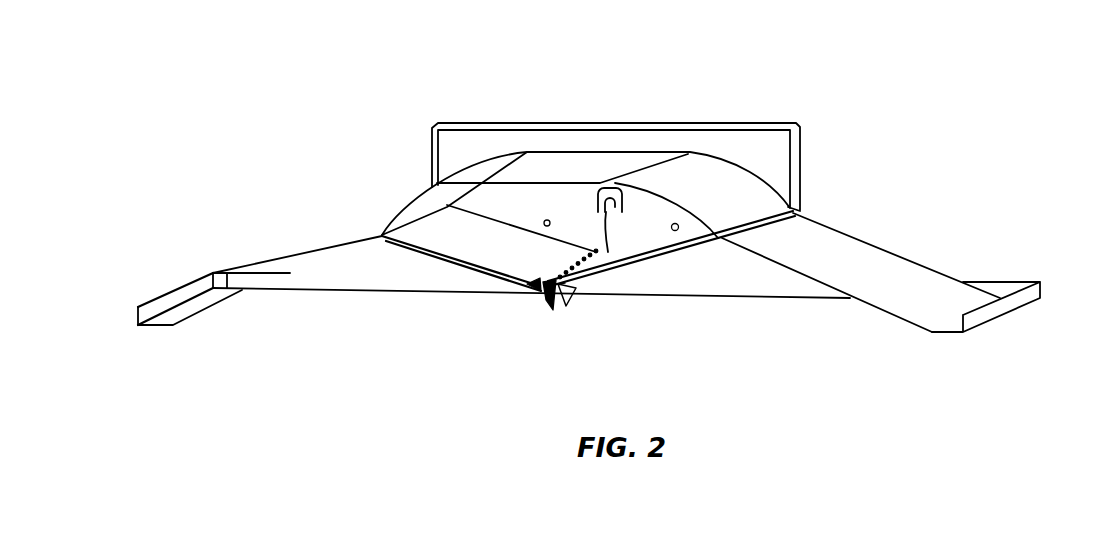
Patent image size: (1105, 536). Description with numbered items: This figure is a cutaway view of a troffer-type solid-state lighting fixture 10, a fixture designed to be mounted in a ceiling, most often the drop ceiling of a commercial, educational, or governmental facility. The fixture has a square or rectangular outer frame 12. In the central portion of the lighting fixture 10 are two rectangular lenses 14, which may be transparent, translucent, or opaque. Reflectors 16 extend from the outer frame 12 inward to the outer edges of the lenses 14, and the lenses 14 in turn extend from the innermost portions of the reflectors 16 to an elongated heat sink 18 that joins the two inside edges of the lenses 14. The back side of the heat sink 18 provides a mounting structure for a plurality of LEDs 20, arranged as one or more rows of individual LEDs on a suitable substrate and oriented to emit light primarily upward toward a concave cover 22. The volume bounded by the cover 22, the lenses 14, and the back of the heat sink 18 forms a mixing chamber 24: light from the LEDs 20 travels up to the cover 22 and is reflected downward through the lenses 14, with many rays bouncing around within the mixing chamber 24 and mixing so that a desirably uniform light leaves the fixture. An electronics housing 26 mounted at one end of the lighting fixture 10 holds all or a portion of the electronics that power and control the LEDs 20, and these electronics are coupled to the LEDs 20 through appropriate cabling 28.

The lighting fixture 10 is at (686, 47).
The outer frame 12 is at (1025, 282).
The lenses 14 is at (440, 253).
The reflectors 16 is at (222, 298).
The heat sink 18 is at (548, 305).
The plurality of LEDs 20 is at (574, 266).
The concave cover 22 is at (733, 193).
The mixing chamber 24 is at (523, 211).
The electronics housing 26 is at (484, 123).
The cabling 28 is at (609, 226).